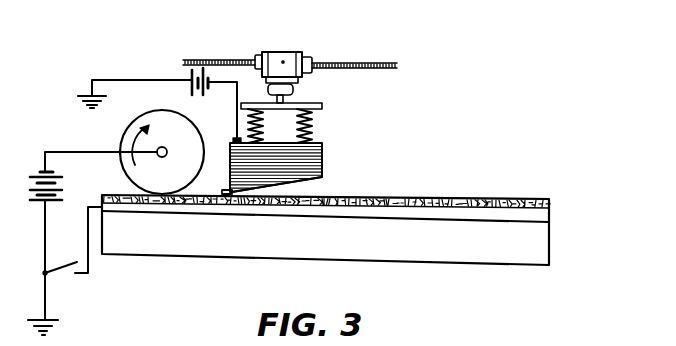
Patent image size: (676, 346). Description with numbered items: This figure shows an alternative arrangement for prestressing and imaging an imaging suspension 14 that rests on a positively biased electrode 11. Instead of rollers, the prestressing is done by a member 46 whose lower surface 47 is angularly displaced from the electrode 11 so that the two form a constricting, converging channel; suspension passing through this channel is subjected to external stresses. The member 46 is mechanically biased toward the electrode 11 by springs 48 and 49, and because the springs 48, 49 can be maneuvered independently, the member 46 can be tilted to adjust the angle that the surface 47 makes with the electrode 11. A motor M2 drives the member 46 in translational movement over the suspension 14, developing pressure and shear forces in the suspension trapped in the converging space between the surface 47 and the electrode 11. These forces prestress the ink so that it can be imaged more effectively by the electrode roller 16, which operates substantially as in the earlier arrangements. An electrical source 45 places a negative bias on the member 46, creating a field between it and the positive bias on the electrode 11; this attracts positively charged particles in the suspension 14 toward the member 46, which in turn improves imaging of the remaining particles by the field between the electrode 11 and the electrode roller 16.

The electrode 11 is at (633, 203).
The suspension 14 is at (548, 199).
The electrode roller 16 is at (131, 180).
The electrical source 45 is at (168, 72).
The member 46 is at (392, 163).
The lower surface 47 is at (286, 184).
The spring 48 is at (247, 127).
The spring 49 is at (313, 127).
The motor M2 is at (262, 51).